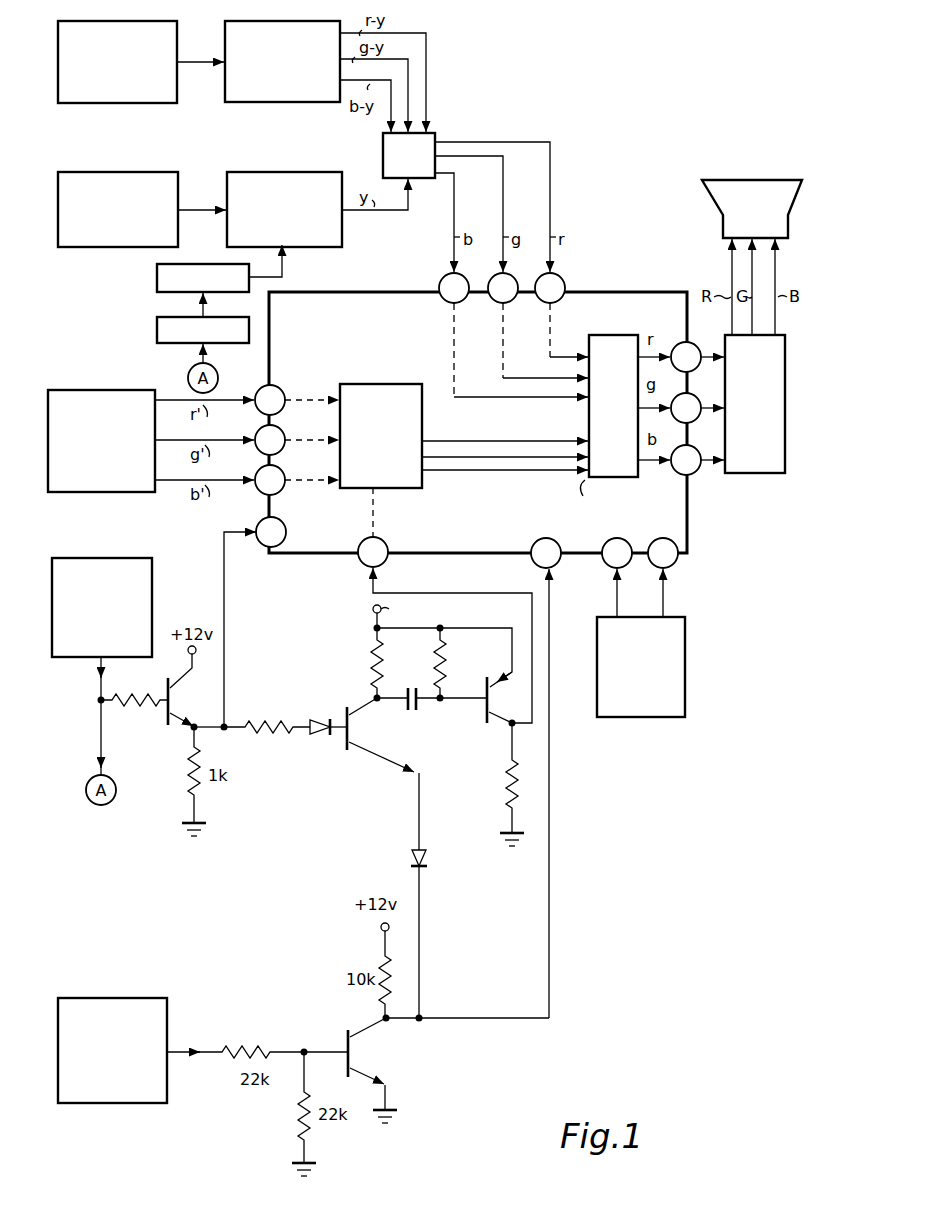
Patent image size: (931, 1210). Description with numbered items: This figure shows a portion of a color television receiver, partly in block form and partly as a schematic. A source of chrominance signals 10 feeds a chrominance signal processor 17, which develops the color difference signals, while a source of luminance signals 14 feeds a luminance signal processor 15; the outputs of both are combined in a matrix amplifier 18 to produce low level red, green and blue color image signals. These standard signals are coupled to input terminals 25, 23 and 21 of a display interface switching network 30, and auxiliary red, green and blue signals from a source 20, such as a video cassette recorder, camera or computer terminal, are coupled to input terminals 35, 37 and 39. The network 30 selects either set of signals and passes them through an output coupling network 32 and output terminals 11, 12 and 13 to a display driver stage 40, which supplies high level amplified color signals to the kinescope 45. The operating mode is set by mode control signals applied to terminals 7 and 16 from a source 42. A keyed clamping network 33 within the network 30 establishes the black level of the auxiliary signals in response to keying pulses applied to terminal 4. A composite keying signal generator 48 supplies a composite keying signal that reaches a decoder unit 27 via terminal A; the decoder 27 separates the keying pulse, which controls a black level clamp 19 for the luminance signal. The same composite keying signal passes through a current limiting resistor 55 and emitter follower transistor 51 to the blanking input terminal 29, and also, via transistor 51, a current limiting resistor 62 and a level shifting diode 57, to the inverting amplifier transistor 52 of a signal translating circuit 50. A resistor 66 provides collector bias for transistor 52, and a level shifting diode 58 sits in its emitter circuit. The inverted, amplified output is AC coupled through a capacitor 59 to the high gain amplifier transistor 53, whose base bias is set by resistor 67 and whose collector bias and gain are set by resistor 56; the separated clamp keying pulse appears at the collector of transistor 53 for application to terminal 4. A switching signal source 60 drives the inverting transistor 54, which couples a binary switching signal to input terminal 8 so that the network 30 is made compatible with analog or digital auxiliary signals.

The source of chrominance signals 10 is at (158, 103).
The source of luminance signals 14 is at (94, 171).
The luminance signal processor 15 is at (265, 171).
The chrominance signal processor 17 is at (318, 102).
The matrix amplifier 18 is at (383, 150).
The black level clamp 19 is at (157, 282).
The decoder unit 27 is at (157, 328).
The source of auxiliary color image representative video signals 20 is at (79, 390).
The display interface switching network 30 is at (364, 339).
The keyed clamping network 33 is at (422, 417).
The output coupling network 32 is at (597, 335).
The display driver stage 40 is at (760, 474).
The color image displaying kinescope 45 is at (757, 180).
The source of mode control signals 42 is at (685, 658).
The composite keying signal generator 48 is at (152, 582).
The signal translating circuit 50 is at (301, 657).
The emitter follower transistor 51 is at (206, 716).
The inverting amplifier transistor 52 is at (386, 742).
The high gain amplifier transistor 53 is at (524, 712).
The inverting transistor 54 is at (399, 1062).
The current limiting resistor 55 is at (125, 695).
The resistor 56 is at (507, 791).
The level shifting diode 57 is at (316, 718).
The level shifting diode 58 is at (427, 858).
The capacitor 59 is at (412, 676).
The current limiting resistor 62 is at (266, 720).
The resistor 66 is at (371, 666).
The resistor 67 is at (445, 687).
The switching signal source 60 is at (122, 998).
The terminal 4 is at (373, 552).
The terminal 7 is at (617, 553).
The input terminal 8 is at (546, 553).
The output terminal 11 is at (686, 357).
The output terminal 12 is at (686, 408).
The output terminal 13 is at (686, 460).
The terminal 16 is at (663, 553).
The input terminal 21 is at (454, 288).
The input terminal 23 is at (503, 288).
The input terminal 25 is at (550, 288).
The blanking input terminal 29 is at (271, 532).
The input terminal 35 is at (270, 400).
The input terminal 37 is at (270, 440).
The input terminal 39 is at (270, 480).